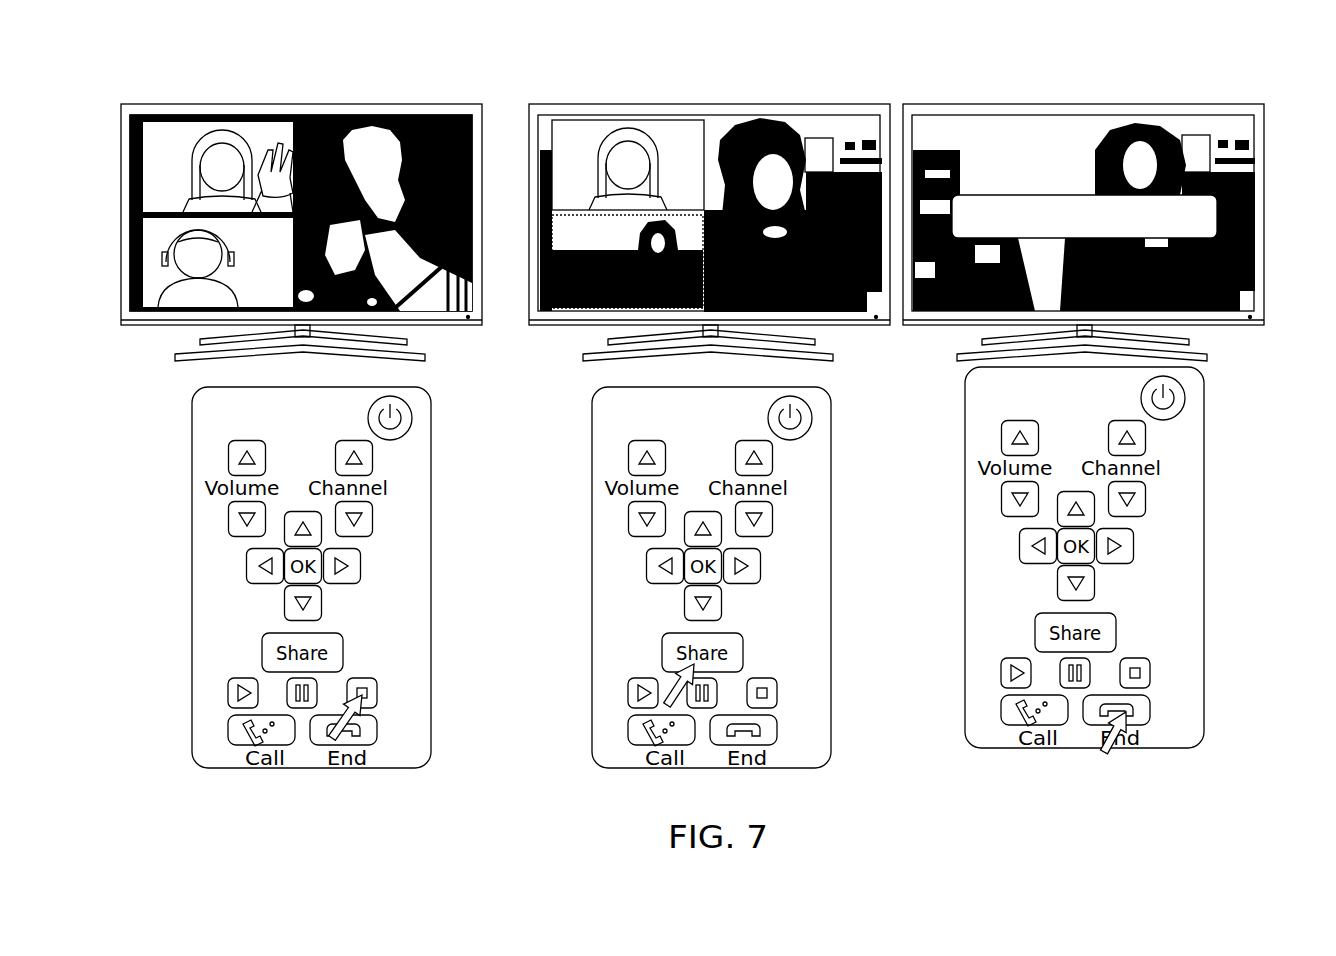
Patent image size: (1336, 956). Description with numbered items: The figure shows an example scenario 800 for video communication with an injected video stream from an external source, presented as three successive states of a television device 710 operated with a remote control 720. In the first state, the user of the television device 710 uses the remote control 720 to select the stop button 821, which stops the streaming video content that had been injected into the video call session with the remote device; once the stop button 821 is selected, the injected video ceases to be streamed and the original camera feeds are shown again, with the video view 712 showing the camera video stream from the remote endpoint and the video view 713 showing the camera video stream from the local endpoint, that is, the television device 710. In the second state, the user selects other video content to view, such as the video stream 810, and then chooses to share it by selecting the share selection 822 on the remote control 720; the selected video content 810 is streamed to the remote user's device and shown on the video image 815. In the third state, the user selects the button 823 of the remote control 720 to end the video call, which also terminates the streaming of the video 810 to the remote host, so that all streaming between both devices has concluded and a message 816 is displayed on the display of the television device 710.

The television device 710 is at (272, 103).
The video view 712 is at (167, 125).
The video view 713 is at (153, 303).
The remote control device 720 is at (192, 590).
The example scenario 800 is at (1238, 88).
The video stream 810 is at (733, 122).
The video image 815 is at (560, 310).
The message 816 is at (1217, 223).
The stop button 821 is at (357, 732).
The share selection 822 is at (672, 670).
The button 823 is at (1104, 752).